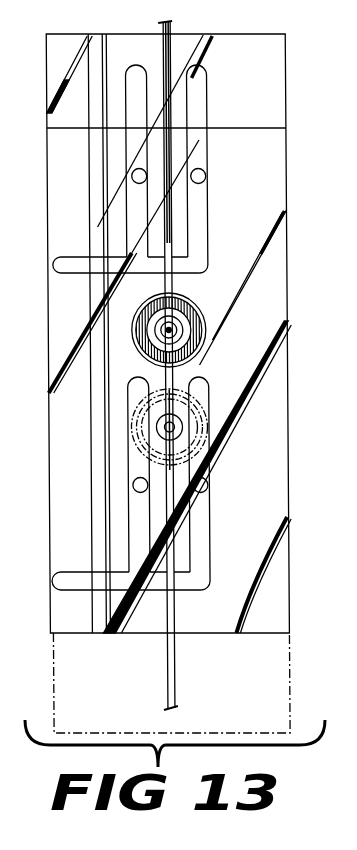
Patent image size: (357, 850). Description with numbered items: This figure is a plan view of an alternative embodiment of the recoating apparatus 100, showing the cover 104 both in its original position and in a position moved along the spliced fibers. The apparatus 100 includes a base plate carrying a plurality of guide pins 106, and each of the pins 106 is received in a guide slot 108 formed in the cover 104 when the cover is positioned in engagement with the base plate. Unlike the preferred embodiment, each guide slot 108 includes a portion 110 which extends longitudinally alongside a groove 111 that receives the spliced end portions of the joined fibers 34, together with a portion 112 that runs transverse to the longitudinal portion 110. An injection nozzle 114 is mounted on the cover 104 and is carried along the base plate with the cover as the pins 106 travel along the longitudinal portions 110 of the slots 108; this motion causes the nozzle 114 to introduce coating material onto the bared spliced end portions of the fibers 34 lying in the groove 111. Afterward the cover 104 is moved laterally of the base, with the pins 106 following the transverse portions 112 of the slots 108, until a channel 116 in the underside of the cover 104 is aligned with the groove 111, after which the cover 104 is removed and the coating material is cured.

The joined fibers 34 is at (171, 24).
The apparatus 100 is at (296, 594).
The cover 104 is at (47, 607).
The guide pins 106 is at (197, 170).
The guide slot 108 is at (202, 272).
The longitudinally extending portion 110 is at (187, 110).
The groove 111 is at (162, 46).
The transverse portion 112 is at (80, 272).
The injection nozzle 114 is at (137, 418).
The channel 116 is at (98, 607).